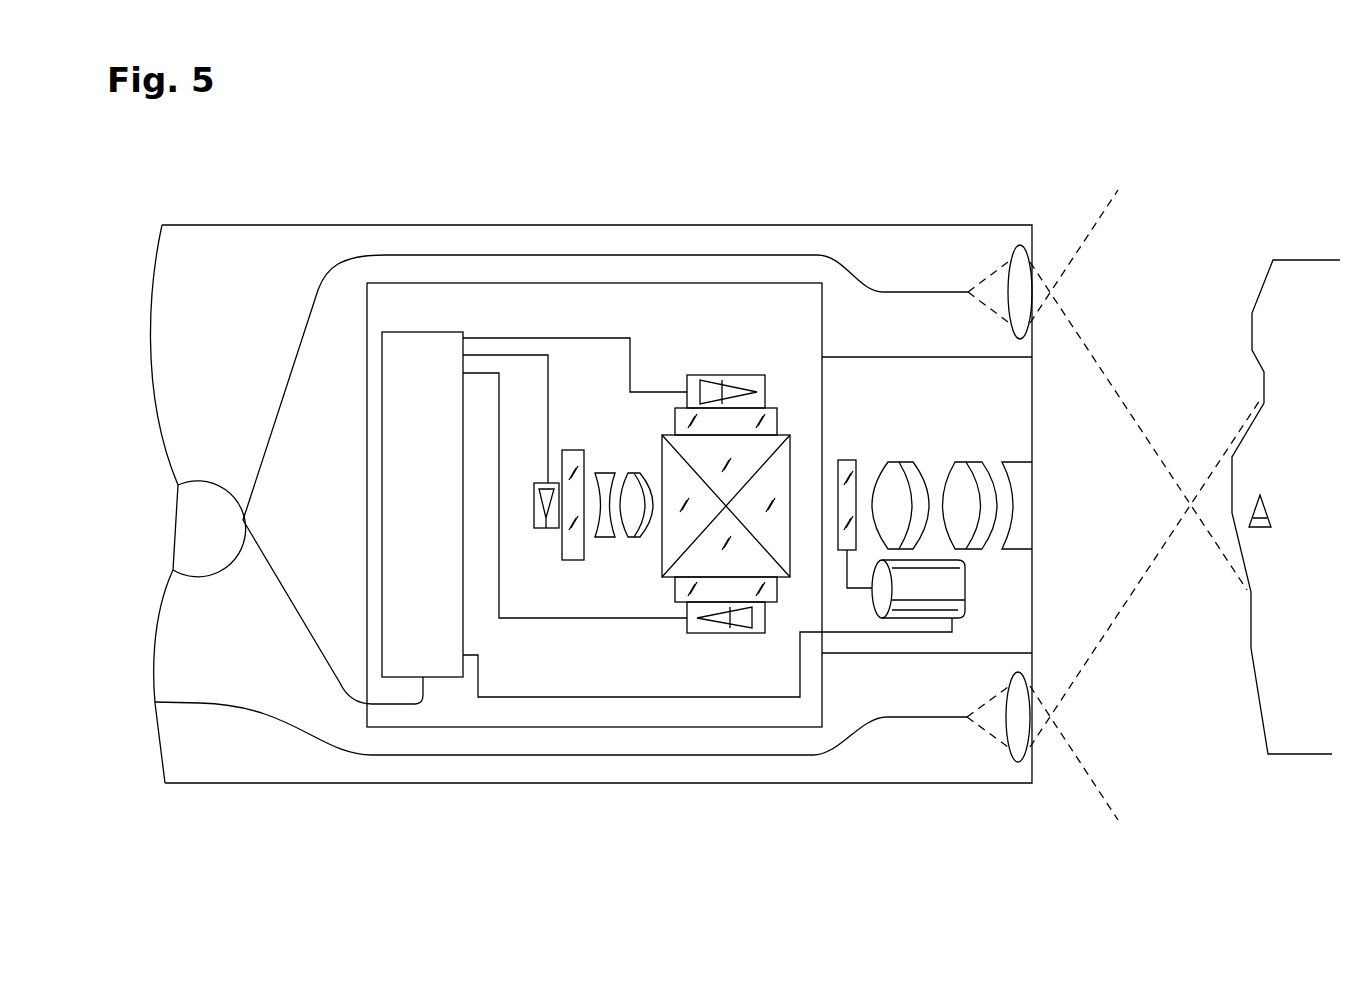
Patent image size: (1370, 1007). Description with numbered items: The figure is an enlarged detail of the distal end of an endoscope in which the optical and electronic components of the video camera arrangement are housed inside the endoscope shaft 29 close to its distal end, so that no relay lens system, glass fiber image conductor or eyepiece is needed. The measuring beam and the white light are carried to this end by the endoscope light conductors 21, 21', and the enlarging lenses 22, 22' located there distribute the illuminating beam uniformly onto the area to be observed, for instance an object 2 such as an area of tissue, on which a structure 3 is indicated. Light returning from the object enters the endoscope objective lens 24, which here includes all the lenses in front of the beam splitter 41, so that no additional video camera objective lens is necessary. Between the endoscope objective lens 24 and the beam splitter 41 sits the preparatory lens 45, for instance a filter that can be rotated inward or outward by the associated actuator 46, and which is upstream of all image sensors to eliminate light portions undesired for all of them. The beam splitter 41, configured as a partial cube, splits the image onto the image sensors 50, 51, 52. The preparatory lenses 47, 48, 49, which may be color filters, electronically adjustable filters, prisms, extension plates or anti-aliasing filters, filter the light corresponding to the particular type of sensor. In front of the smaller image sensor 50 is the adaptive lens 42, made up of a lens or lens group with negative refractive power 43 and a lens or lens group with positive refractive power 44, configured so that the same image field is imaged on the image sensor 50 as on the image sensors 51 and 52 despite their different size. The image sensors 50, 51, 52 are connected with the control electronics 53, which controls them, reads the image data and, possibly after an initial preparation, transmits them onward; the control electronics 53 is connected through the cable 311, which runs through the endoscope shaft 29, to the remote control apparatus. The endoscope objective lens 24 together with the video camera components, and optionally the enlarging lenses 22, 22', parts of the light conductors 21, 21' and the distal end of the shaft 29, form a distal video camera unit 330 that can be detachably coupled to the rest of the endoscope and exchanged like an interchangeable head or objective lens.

The object 2 is at (1300, 259).
The structure 3 is at (1272, 510).
The endoscope light conductor 21 is at (561, 553).
The endoscope light conductor 21' is at (676, 219).
The enlarging lens 22 is at (1114, 630).
The enlarging lens 22' is at (1107, 366).
The endoscope objective lens 24 is at (925, 449).
The endoscope shaft 29 is at (240, 784).
The beam splitter 41 is at (791, 452).
The adaptive lens 42 is at (625, 449).
The lens with negative refractive power 43 is at (604, 538).
The lens with positive refractive power 44 is at (642, 538).
The preparatory lens 45 is at (848, 459).
The actuator 46 is at (966, 588).
The preparatory lens 47 is at (577, 449).
The preparatory lens 48 is at (777, 418).
The preparatory lens 49 is at (778, 590).
The image sensor 50 is at (548, 529).
The image sensor 51 is at (725, 374).
The image sensor 52 is at (720, 634).
The control electronics 53 is at (381, 500).
The cable 311 is at (206, 486).
The distal video camera unit 330 is at (515, 728).